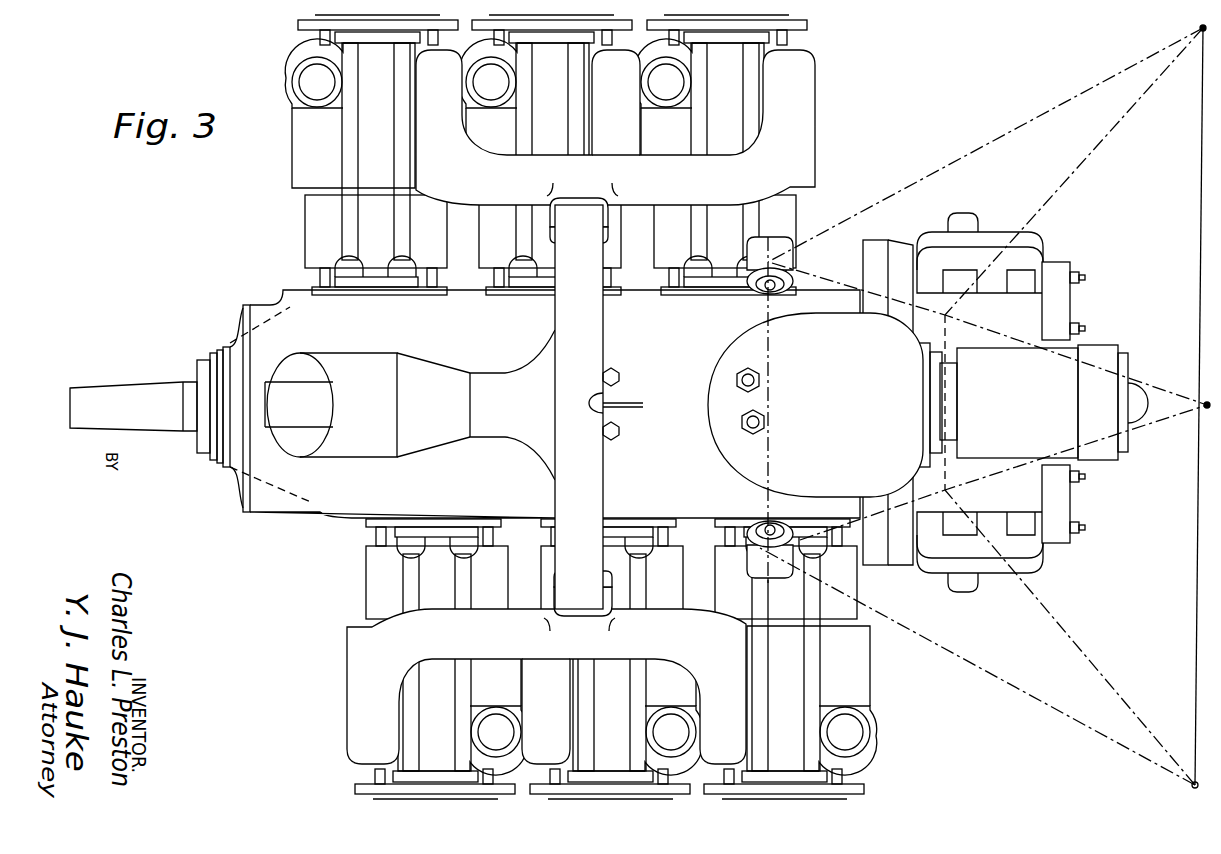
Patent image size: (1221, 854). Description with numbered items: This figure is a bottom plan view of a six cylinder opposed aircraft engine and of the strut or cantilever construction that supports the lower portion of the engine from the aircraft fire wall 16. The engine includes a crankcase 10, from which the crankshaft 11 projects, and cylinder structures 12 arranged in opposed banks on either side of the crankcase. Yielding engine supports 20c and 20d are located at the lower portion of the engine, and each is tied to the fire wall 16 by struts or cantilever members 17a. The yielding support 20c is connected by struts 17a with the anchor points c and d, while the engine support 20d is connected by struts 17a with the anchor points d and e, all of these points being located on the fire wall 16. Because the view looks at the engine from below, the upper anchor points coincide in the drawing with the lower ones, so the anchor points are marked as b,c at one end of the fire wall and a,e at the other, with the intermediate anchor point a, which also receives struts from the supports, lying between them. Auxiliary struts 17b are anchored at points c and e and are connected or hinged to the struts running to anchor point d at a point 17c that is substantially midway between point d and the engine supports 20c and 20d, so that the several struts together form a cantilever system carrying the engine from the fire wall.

The crankcase 10 is at (278, 298).
The crankshaft 11 is at (156, 392).
The cylinder structures 12 is at (296, 110).
The fire wall 16 is at (1200, 657).
The struts 17a is at (975, 150).
The auxiliary struts 17b is at (1063, 180).
The point 17c is at (946, 316).
The yielding support 20c is at (753, 295).
The yielding support 20d is at (763, 515).
The spaced point a is at (1207, 400).
The spaced points b,c is at (1200, 28).
The spaced points a,e is at (1193, 780).